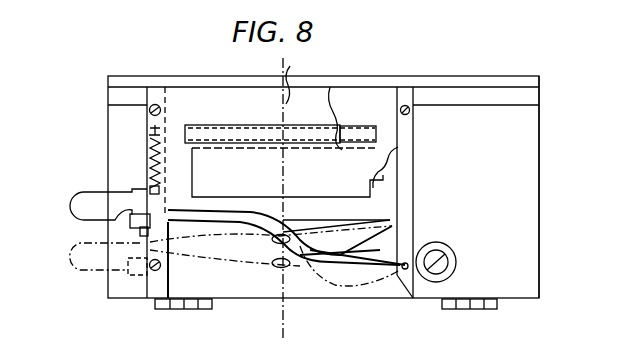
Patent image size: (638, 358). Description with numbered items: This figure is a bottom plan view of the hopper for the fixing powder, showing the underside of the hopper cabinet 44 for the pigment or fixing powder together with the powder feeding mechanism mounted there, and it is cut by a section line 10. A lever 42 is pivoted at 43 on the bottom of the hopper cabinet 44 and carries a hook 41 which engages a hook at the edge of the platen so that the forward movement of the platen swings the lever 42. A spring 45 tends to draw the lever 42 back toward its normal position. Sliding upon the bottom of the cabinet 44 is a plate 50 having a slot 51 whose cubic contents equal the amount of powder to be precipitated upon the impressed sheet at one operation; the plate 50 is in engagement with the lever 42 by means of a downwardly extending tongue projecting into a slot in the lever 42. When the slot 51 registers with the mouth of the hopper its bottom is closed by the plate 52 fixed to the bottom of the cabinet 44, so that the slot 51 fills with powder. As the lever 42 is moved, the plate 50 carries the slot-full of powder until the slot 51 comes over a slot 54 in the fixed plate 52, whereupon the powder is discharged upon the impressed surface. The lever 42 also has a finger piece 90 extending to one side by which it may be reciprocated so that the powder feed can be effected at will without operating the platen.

The section line 10 is at (283, 62).
The hook 41 is at (130, 220).
The lever 42 is at (253, 222).
The pivot 43 is at (440, 273).
The hopper cabinet 44 is at (540, 155).
The spring 45 is at (147, 148).
The plate 50 is at (363, 162).
The slot 51 is at (341, 136).
The plate 52 is at (290, 66).
The slot 54 is at (232, 150).
The finger piece 90 is at (86, 202).